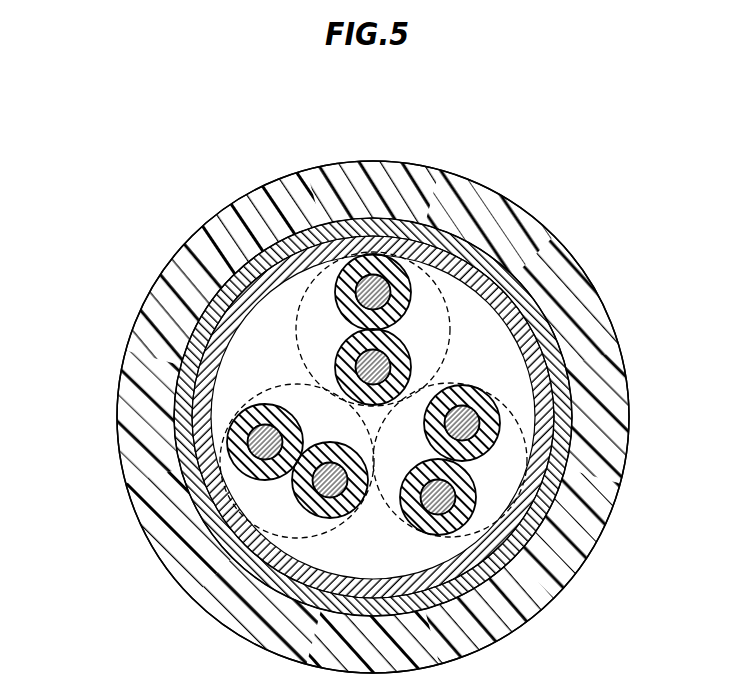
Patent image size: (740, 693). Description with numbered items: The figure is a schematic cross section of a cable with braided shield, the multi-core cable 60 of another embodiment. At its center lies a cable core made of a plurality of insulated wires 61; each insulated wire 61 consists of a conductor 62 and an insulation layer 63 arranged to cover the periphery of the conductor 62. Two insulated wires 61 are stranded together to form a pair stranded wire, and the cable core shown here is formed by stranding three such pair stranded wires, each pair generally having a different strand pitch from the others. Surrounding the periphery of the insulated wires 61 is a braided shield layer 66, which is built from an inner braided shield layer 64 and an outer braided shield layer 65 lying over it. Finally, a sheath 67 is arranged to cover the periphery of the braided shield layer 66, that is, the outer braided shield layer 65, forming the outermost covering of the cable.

The multi-core cable 60 is at (600, 163).
The insulated wire 61 is at (430, 292).
The conductor 62 is at (422, 268).
The insulation layer 63 is at (408, 275).
The inner braided shield layer 64 is at (200, 449).
The outer braided shield layer 65 is at (195, 483).
The braided shield layer 66 is at (288, 417).
The sheath 67 is at (615, 356).